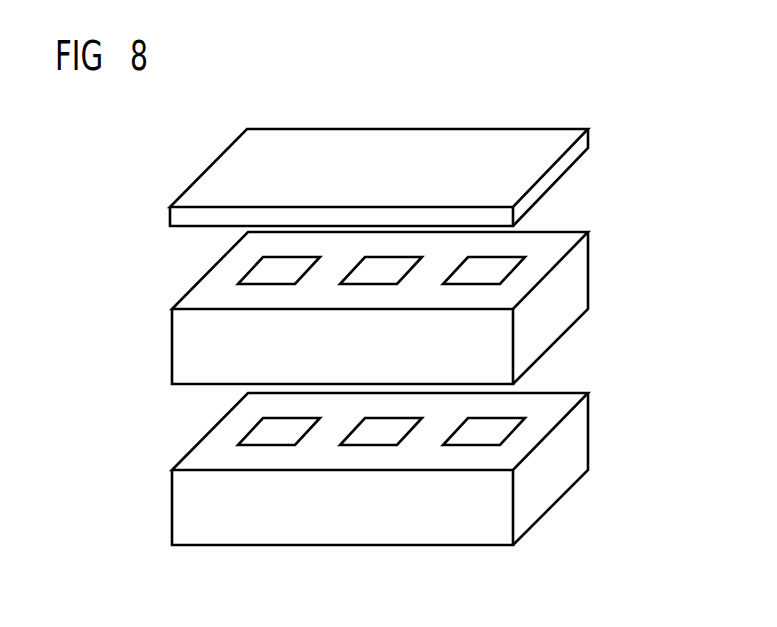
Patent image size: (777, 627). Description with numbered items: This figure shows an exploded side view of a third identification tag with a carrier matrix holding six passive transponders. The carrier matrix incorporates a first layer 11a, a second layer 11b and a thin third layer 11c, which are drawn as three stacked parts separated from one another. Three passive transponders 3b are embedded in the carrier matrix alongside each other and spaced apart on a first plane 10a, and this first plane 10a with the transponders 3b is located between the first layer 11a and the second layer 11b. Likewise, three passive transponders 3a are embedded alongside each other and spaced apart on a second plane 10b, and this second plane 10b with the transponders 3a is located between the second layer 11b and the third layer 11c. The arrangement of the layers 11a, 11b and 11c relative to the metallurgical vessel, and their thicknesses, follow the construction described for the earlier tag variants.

The third layer 11c is at (585, 144).
The second plane 10b is at (419, 278).
The second layer 11b is at (583, 291).
The passive transponders 3a is at (273, 277).
The first plane 10a is at (419, 440).
The first layer 11a is at (583, 453).
The passive transponders 3b is at (273, 435).